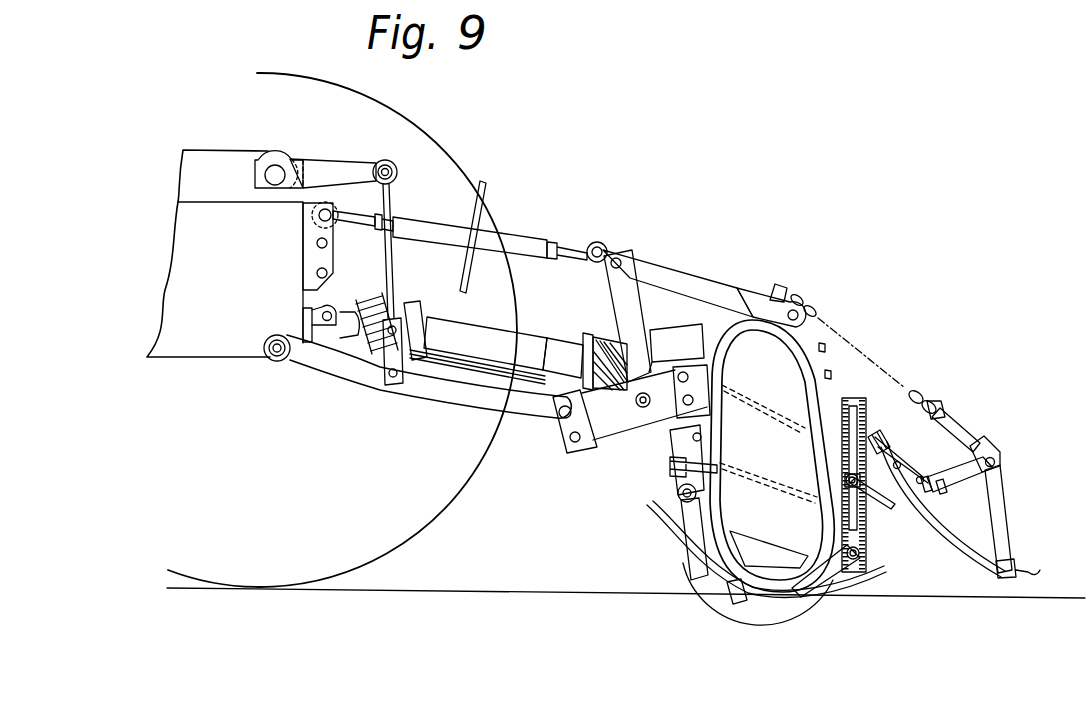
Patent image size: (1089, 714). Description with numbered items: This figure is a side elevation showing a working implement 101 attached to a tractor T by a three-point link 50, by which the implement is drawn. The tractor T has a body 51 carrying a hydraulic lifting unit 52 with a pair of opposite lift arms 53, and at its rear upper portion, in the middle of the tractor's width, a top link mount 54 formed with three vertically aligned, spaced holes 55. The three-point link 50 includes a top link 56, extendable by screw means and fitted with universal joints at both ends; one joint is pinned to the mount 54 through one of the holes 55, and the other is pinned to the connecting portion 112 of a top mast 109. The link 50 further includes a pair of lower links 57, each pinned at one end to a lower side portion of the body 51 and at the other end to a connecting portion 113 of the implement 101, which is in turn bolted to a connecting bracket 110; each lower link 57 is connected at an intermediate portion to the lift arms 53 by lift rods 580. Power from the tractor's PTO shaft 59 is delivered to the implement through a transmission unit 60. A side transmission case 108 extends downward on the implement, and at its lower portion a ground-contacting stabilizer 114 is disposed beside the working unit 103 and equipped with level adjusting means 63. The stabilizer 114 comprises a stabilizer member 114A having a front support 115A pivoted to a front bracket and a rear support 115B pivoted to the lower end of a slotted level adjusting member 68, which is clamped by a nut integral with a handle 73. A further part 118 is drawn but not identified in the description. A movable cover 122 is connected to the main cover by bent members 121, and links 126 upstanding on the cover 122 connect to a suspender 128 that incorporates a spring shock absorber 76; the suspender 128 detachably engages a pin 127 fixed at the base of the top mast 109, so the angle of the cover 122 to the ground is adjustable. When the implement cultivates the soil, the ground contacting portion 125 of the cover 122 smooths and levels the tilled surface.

The tractor T is at (180, 367).
The body 51 is at (170, 305).
The hydraulic lifting unit 52 is at (220, 163).
The lift arms 53 is at (337, 170).
The top link mount 54 is at (310, 233).
The holes 55 is at (317, 273).
The top link 56 is at (530, 242).
The lower links 57 is at (460, 398).
The lift rods 580 is at (397, 270).
The PTO shaft 59 is at (307, 363).
The transmission unit 60 is at (347, 358).
The three-point link 50 is at (423, 400).
The connecting portion 112 is at (607, 242).
The top mast 109 is at (702, 280).
The working implement 101 is at (767, 258).
The pin 127 is at (783, 290).
The suspender 128 is at (923, 390).
The connecting portion 113 is at (560, 430).
The connecting bracket 110 is at (703, 378).
The side transmission case 108 is at (813, 407).
The handle 73 is at (893, 497).
The level adjusting member 68 is at (867, 530).
The front support 115A is at (673, 503).
The rear support 115B is at (840, 577).
The stabilizer 114 is at (667, 540).
The stabilizer member 114A is at (700, 583).
The pad 118 is at (740, 603).
The working unit 103 is at (800, 623).
The level adjusting means 63 is at (873, 413).
The bent members 121 is at (890, 442).
The movable cover 122 is at (972, 442).
The shock absorber 76 is at (980, 438).
The links 126 is at (993, 483).
The ground contacting portion 125 is at (1027, 570).